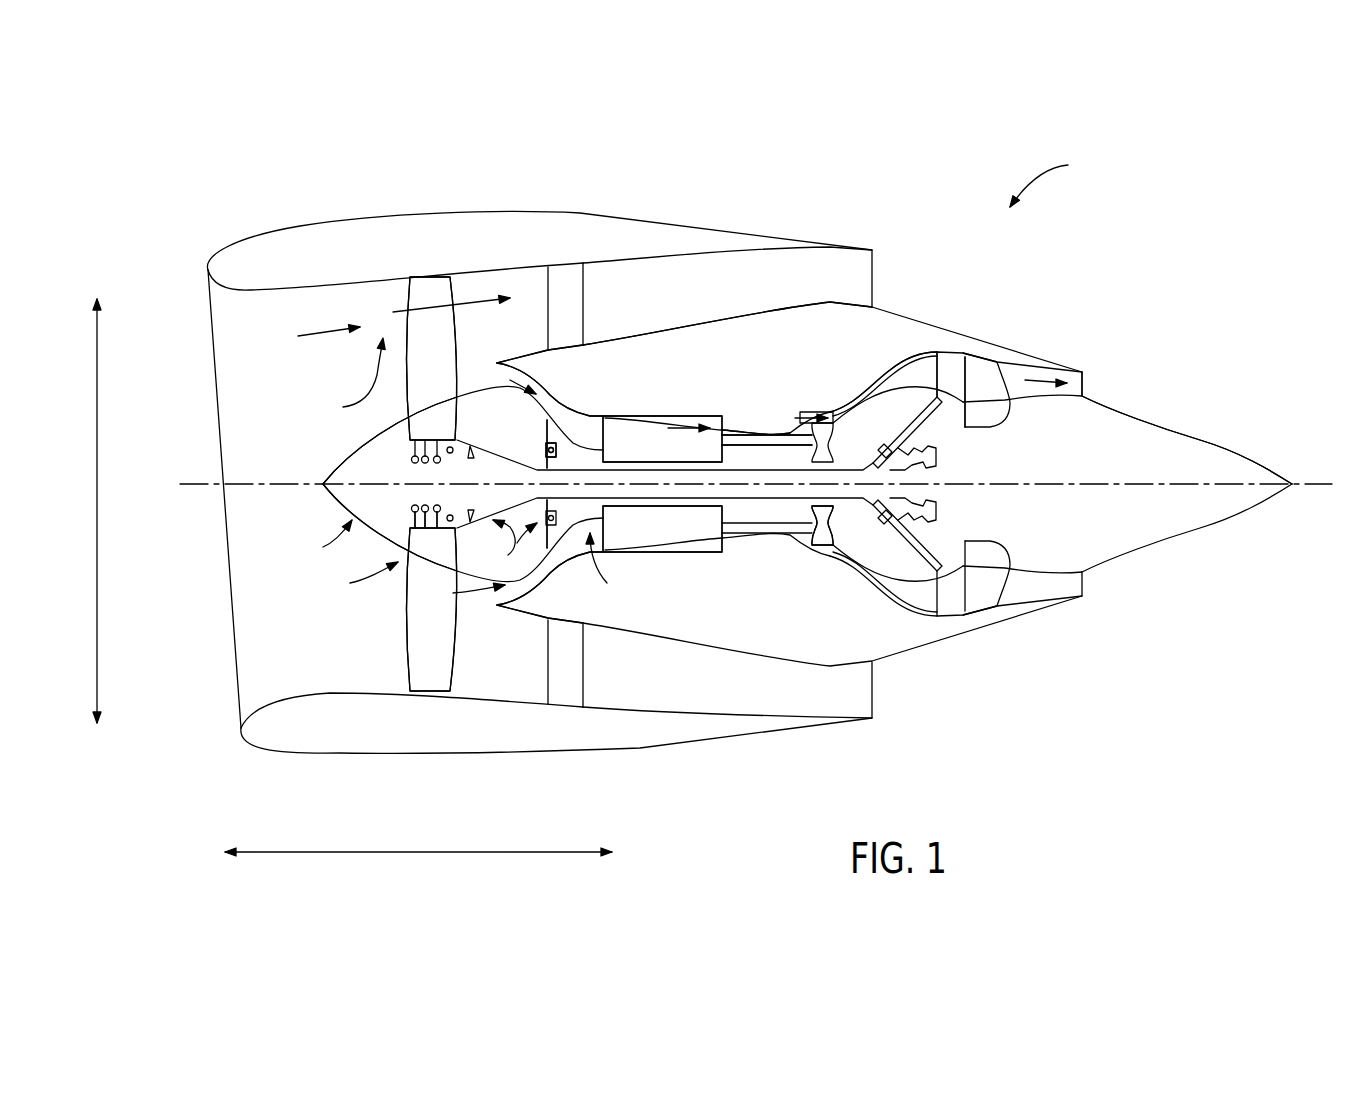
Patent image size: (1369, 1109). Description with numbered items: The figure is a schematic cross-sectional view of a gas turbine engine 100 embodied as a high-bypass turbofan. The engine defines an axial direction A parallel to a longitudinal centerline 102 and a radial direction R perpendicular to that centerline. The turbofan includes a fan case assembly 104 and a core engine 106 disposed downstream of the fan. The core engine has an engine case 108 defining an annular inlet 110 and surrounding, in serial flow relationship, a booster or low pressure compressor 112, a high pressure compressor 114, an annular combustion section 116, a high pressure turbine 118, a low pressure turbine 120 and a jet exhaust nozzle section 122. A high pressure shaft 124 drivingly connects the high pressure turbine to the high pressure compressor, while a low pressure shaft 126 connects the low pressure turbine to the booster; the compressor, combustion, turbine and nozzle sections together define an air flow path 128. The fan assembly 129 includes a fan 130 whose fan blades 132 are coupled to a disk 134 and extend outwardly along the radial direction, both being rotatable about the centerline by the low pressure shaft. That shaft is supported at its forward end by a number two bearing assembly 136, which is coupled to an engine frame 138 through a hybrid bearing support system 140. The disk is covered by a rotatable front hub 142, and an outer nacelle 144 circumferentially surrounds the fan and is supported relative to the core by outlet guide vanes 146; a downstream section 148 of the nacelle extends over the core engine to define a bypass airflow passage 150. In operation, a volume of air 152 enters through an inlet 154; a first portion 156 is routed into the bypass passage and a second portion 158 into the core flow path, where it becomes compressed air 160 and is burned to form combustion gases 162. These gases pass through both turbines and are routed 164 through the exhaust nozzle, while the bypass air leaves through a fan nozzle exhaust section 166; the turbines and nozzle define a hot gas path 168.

The gas turbine engine 100 is at (1062, 178).
The longitudinal centerline 102 is at (1300, 483).
The fan case assembly 104 is at (345, 381).
The core engine 106 is at (773, 340).
The engine case 108 is at (695, 553).
The annular inlet 110 is at (508, 582).
The low pressure compressor 112 is at (497, 366).
The high pressure compressor 114 is at (632, 428).
The annular combustion section 116 is at (763, 430).
The high pressure turbine 118 is at (815, 552).
The low pressure turbine 120 is at (873, 386).
The jet exhaust nozzle section 122 is at (1100, 395).
The high pressure shaft 124 is at (730, 445).
The low pressure shaft 126 is at (590, 526).
The air flow path 128 is at (618, 566).
The fan assembly 129 is at (314, 542).
The fan 130 is at (354, 581).
The fan blades 132 is at (406, 615).
The disk 134 is at (408, 433).
The number two bearing assembly 136 is at (476, 543).
The engine frame 138 is at (545, 613).
The hybrid bearing support system 140 is at (544, 465).
The rotatable front hub 142 is at (338, 497).
The outer nacelle 144 is at (383, 749).
The outlet guide vanes 146 is at (584, 667).
The downstream section of nacelle 148 is at (747, 228).
The bypass airflow passage 150 is at (709, 306).
The volume of air 152 is at (322, 334).
The inlet 154 is at (206, 310).
The first portion of air 156 is at (420, 308).
The second portion of air 158 is at (480, 376).
The compressed air 160 is at (688, 427).
The combustion gases 162 is at (803, 407).
The routing of combustion gases 164 is at (1040, 371).
The fan nozzle exhaust section 166 is at (862, 270).
The hot gas path 168 is at (928, 348).
The radial direction R is at (97, 504).
The axial direction A is at (418, 853).